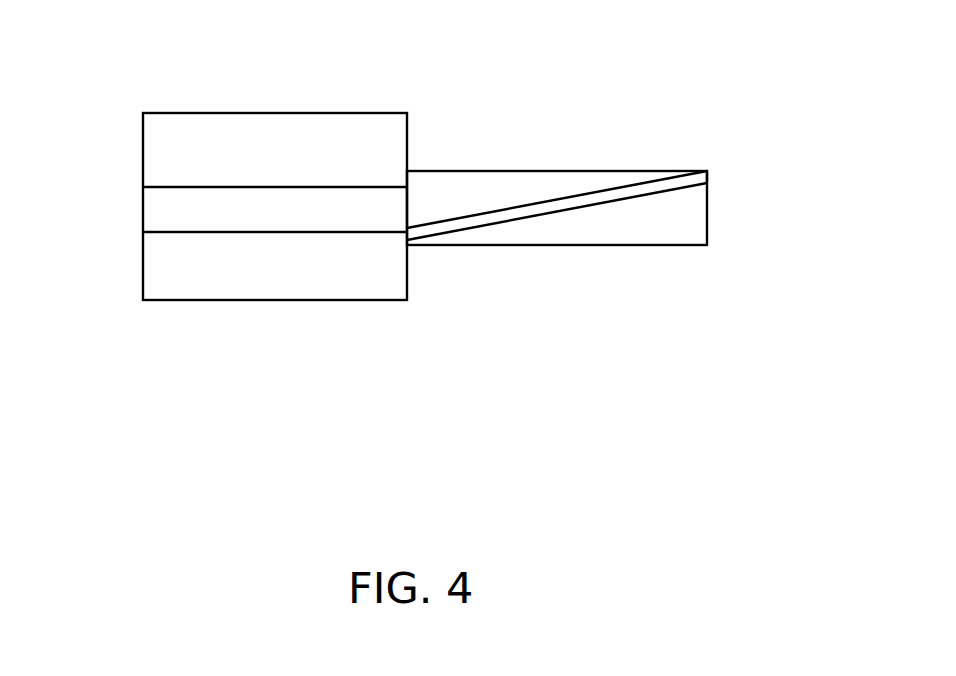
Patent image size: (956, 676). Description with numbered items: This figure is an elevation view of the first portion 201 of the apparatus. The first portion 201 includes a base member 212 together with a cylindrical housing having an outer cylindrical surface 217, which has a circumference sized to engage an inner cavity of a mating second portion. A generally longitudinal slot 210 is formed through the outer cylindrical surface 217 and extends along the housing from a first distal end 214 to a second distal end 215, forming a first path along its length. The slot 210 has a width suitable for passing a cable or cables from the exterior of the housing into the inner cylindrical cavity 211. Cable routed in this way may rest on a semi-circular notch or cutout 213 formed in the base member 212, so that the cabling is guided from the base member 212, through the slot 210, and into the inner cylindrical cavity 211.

The first portion 201 is at (640, 46).
The slot 210 is at (582, 208).
The inner cylindrical cavity 211 is at (728, 205).
The base member 212 is at (152, 116).
The semi-circular notch or cutout 213 is at (178, 194).
The first distal end 214 is at (408, 168).
The second distal end 215 is at (706, 168).
The outer cylindrical surface 217 is at (557, 199).